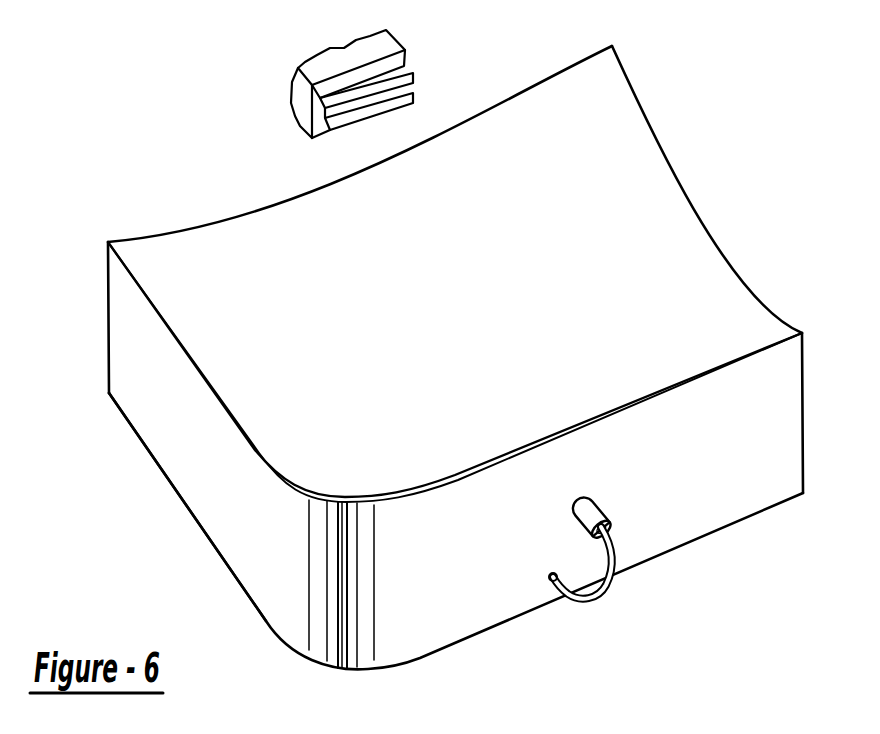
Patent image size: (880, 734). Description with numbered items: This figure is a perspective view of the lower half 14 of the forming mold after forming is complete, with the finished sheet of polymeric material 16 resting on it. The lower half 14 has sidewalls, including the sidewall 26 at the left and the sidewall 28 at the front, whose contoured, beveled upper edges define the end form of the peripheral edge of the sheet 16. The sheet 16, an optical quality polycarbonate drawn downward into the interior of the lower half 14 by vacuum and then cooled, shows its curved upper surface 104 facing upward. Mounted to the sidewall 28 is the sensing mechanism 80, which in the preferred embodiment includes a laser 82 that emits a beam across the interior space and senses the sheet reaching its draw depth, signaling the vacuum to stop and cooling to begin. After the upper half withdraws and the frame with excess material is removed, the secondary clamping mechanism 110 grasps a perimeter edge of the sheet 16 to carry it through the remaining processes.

The lower half 14 is at (174, 488).
The sheet of polymeric material 16 is at (640, 103).
The sidewall 26 is at (240, 562).
The sidewall 28 is at (717, 508).
The sensing mechanism 80 is at (609, 506).
The laser 82 is at (618, 524).
The upper surface 104 is at (648, 198).
The secondary clamping mechanism 110 is at (414, 76).